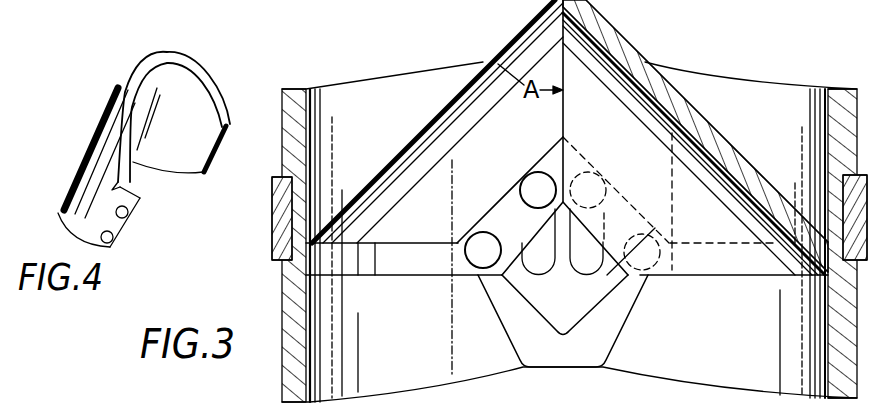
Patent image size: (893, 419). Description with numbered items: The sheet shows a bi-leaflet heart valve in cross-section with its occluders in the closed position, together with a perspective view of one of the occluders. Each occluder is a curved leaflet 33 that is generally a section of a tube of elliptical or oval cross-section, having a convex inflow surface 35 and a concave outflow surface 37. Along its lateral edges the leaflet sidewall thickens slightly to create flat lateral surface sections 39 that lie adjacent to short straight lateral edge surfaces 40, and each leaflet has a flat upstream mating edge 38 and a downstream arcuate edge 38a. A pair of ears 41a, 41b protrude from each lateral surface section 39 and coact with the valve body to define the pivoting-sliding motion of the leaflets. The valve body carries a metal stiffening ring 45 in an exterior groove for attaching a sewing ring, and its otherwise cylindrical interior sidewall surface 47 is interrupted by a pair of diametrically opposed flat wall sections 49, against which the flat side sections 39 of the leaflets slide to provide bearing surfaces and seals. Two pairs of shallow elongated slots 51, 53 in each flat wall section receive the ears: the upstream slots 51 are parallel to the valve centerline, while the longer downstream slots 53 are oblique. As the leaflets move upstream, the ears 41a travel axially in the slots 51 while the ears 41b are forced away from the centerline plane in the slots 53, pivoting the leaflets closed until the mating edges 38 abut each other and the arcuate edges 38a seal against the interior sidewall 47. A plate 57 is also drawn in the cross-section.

In FIG. 4, the curved leaflets 33 is at (147, 56).
In FIG. 3, the convex inflow surface 35 is at (622, 37).
In FIG. 4, the convex inflow surface 35 is at (102, 120).
In FIG. 3, the concave outflow surface 37 is at (642, 161).
In FIG. 4, the concave outflow surface 37 is at (190, 134).
In FIG. 4, the flat upstream mating edge 38 is at (197, 72).
In FIG. 3, the downstream arcuate edge 38a is at (306, 268).
In FIG. 4, the downstream arcuate edge 38a is at (57, 212).
In FIG. 3, the flat lateral surface sections 39 is at (530, 234).
In FIG. 4, the flat lateral surface sections 39 is at (132, 183).
In FIG. 4, the straight lateral edge surfaces 40 is at (218, 147).
In FIG. 3, the ears 41a is at (546, 173).
In FIG. 4, the ears 41a is at (128, 221).
In FIG. 3, the ears 41b is at (496, 233).
In FIG. 4, the ears 41b is at (111, 244).
In FIG. 3, the metal stiffening ring 45 is at (271, 220).
In FIG. 3, the cylindrical interior sidewall surface 47 is at (747, 332).
In FIG. 3, the flat wall sections 49 is at (657, 357).
In FIG. 3, the upstream slots 51 is at (584, 264).
In FIG. 3, the downstream slots 53 is at (527, 317).
In FIG. 3, the plate 57 is at (390, 262).